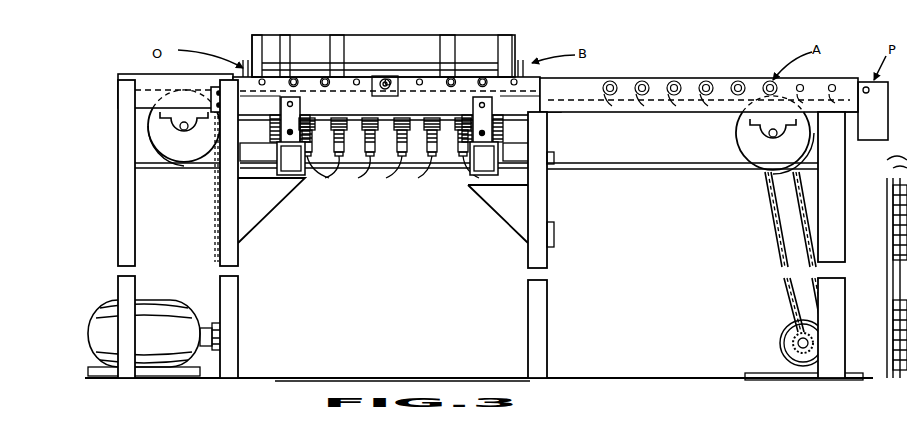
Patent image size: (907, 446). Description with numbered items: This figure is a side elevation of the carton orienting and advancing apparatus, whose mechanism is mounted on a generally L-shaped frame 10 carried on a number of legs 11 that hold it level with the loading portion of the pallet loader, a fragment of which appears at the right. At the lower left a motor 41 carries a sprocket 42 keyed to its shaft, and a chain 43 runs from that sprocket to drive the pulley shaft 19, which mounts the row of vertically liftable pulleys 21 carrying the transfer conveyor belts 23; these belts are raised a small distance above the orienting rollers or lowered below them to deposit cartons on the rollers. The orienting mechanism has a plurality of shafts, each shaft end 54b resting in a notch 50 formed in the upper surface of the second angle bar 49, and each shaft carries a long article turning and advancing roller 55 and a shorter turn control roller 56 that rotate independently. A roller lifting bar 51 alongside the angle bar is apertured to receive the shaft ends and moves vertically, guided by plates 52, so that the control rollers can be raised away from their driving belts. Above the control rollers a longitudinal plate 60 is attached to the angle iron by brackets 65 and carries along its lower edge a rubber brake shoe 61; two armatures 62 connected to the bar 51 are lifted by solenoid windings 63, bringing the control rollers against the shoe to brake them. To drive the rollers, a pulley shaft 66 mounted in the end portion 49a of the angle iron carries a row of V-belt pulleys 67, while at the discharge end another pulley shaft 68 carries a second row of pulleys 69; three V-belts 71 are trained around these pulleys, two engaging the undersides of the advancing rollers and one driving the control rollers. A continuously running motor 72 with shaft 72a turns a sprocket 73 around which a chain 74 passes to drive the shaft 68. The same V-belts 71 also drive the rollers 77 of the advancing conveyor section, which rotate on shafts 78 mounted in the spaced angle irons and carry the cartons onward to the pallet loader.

The frame 10 is at (728, 80).
The legs 11 is at (228, 243).
The pulley shaft 19 is at (362, 172).
The vertically liftable pulleys 21 is at (325, 172).
The transfer conveyor belts 23 is at (420, 172).
The motor 41 is at (158, 312).
The sprocket 42 is at (224, 337).
The chain 43 is at (214, 207).
The second angle bar 49 is at (389, 98).
The end portion of angle iron 49a is at (150, 74).
The notch 50 is at (336, 103).
The roller lifting bar 51 is at (390, 117).
The guide plates 52 is at (228, 90).
The shaft end 54b is at (322, 78).
The article turning and advancing roller 55 is at (892, 184).
The turn control roller 56 is at (385, 78).
The longitudinal plate 60 is at (256, 36).
The rubber brake shoe 61 is at (281, 116).
The armatures 62 is at (276, 146).
The solenoid windings 63 is at (292, 176).
The brackets 65 is at (278, 50).
The pulley shaft 66 is at (181, 124).
The V-belt pulleys 67 is at (178, 156).
The pulley shaft 68 is at (768, 135).
The pulleys 69 is at (748, 156).
The V-belts 71 is at (208, 168).
The motor 72 is at (780, 330).
The motor shaft 72a is at (797, 347).
The sprocket 73 is at (792, 343).
The chain 74 is at (785, 282).
The rollers 77 is at (706, 82).
The shafts 78 is at (705, 96).